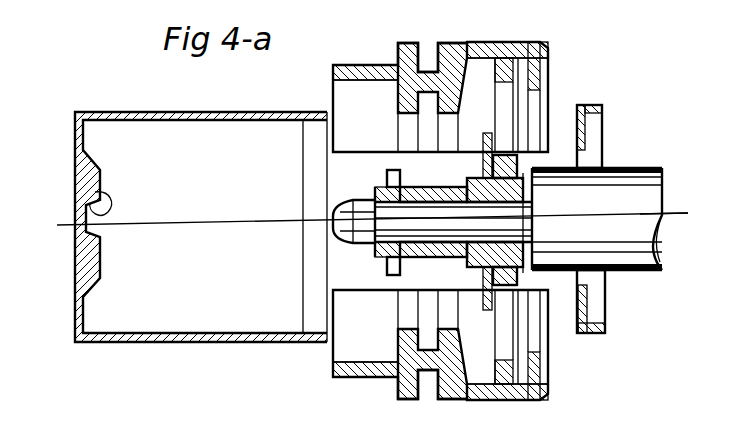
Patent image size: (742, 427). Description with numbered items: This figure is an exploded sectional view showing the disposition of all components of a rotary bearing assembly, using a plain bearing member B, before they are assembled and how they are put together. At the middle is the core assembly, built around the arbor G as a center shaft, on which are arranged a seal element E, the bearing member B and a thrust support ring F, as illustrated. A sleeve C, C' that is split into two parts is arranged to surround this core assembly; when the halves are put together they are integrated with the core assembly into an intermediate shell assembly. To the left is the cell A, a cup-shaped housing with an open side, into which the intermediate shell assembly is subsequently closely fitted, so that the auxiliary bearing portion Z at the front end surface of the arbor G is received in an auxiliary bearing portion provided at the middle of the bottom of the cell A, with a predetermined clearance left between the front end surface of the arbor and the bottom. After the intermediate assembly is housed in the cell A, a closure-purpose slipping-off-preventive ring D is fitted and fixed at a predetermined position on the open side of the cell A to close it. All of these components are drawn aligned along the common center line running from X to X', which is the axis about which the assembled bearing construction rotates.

The cell A is at (138, 111).
The plain bearing member B is at (420, 190).
The sleeve C is at (457, 94).
The sleeve C' is at (440, 352).
The closure-purpose-slipping-off-preventive ring D is at (600, 104).
The seal element E is at (520, 270).
The thrust support ring F is at (366, 196).
The arbor G is at (646, 172).
The auxiliary bearing portion Z is at (95, 192).
The axis end X is at (362, 226).
The axis end X prime X' is at (673, 214).